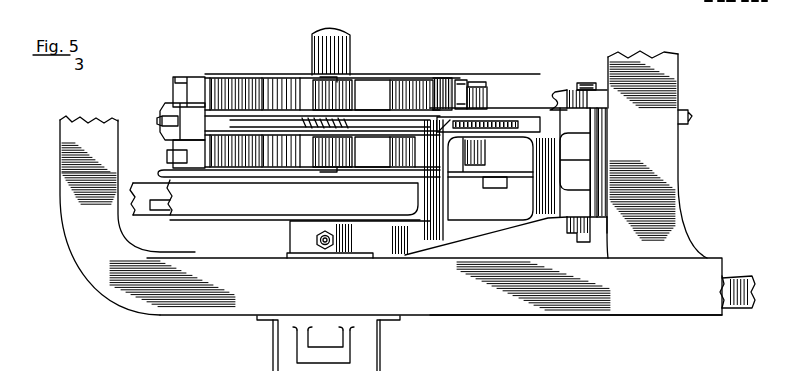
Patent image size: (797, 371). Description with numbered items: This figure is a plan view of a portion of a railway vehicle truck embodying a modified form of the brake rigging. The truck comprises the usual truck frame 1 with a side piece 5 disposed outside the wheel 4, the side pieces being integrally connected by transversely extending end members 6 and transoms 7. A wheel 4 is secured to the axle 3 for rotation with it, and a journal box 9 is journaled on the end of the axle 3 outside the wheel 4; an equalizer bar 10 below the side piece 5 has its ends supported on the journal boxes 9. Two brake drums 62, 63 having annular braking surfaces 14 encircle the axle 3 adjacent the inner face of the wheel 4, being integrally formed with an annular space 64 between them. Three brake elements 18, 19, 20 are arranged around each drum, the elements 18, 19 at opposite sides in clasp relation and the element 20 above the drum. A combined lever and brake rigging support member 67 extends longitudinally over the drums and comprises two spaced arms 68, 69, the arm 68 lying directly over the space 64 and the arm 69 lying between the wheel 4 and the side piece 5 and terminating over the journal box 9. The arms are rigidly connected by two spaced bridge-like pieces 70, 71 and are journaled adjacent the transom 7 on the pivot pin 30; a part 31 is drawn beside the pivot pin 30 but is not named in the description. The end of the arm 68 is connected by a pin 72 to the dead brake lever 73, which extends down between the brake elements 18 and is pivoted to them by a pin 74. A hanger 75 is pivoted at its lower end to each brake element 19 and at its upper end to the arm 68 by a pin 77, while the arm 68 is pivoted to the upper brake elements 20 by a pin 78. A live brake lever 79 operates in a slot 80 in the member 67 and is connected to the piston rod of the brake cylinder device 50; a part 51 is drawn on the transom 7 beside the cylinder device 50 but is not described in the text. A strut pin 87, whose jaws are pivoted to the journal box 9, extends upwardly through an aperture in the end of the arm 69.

The truck frame 1 is at (193, 313).
The axle 3 is at (352, 37).
The wheel 4 is at (189, 216).
The side piece 5 is at (453, 311).
The end member 6 is at (62, 152).
The transom 7 is at (670, 70).
The journal box 9 is at (275, 331).
The equalizer bar 10 is at (748, 310).
The braking surface 14 is at (218, 112).
The brake element 18 is at (175, 78).
The brake element 19 is at (462, 86).
The brake element 20 is at (301, 158).
The pivot pin 30 is at (588, 84).
The hook 31 is at (561, 88).
The brake cylinder device 50 is at (603, 150).
The lug 51 is at (690, 118).
The brake drum 62 is at (409, 96).
The brake drum 63 is at (402, 150).
The annular space 64 is at (216, 176).
The combined lever and brake rigging support member 67 is at (238, 116).
The arm 68 is at (359, 118).
The arm 69 is at (385, 242).
The bridge-like piece 70 is at (446, 200).
The bridge-like piece 71 is at (542, 156).
The pin 72 is at (186, 103).
The dead brake lever 73 is at (162, 124).
The pin 74 is at (168, 162).
The hanger 75 is at (486, 98).
The pin 77 is at (483, 82).
The pin 78 is at (317, 78).
The live brake lever 79 is at (505, 122).
The slot 80 is at (478, 118).
The strut pin 87 is at (324, 248).